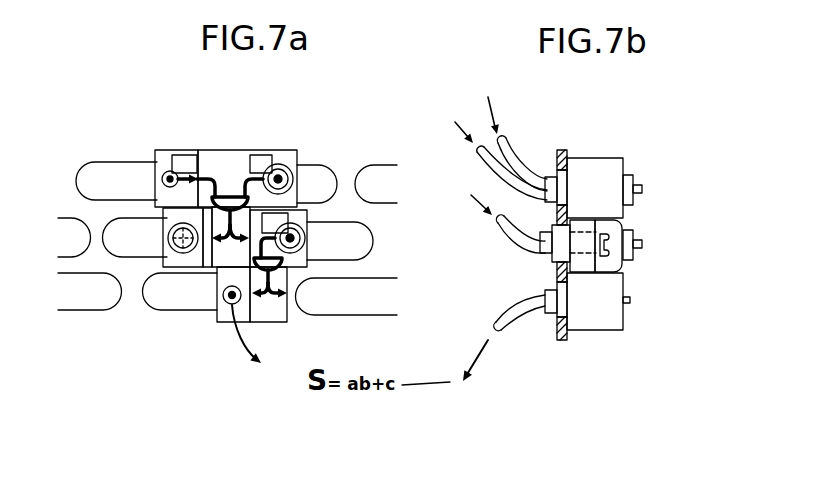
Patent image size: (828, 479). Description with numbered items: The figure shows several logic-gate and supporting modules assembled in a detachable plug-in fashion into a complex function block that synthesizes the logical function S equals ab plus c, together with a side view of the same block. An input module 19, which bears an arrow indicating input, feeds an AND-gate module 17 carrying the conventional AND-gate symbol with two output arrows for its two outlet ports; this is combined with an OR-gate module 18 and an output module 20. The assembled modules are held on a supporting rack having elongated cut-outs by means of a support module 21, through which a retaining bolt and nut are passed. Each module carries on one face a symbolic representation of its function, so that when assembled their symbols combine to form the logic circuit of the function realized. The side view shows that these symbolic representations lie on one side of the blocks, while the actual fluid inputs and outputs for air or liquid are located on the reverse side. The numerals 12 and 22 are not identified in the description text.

In FIG. 7B, the control unit / valve block 12 is at (630, 298).
In FIG. 7A, the AND-gate module 17 is at (235, 158).
In FIG. 7A, the OR-gate module 18 is at (277, 312).
In FIG. 7A, the input module 19 is at (162, 158).
In FIG. 7A, the output module 20 is at (212, 316).
In FIG. 7A, the support module 21 is at (173, 258).
In FIG. 7A, the channel slots 22 is at (227, 238).